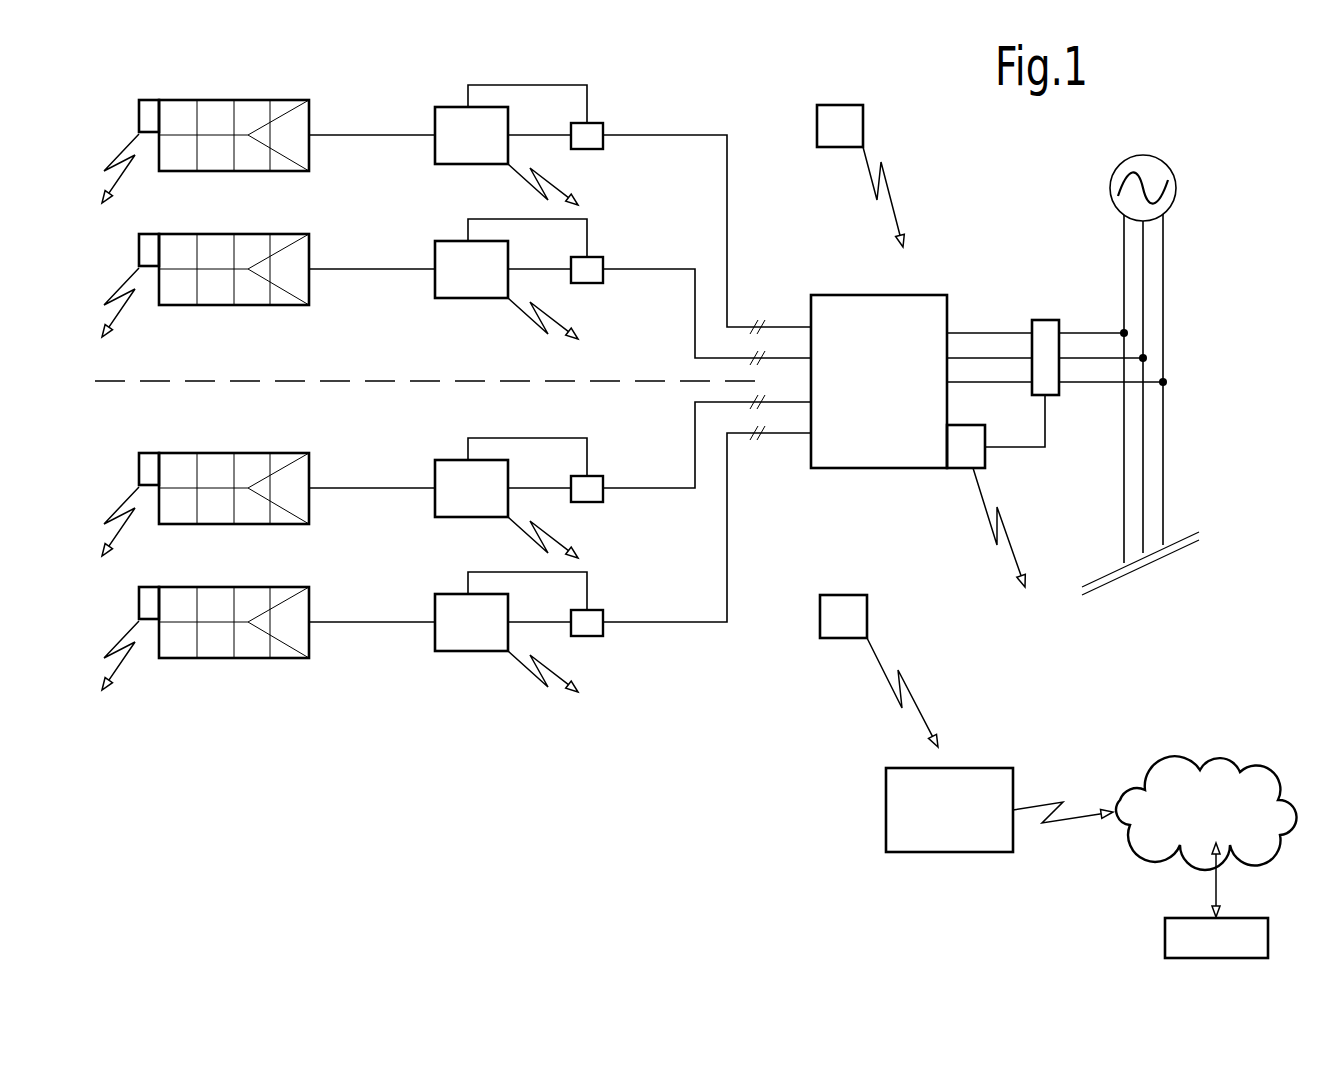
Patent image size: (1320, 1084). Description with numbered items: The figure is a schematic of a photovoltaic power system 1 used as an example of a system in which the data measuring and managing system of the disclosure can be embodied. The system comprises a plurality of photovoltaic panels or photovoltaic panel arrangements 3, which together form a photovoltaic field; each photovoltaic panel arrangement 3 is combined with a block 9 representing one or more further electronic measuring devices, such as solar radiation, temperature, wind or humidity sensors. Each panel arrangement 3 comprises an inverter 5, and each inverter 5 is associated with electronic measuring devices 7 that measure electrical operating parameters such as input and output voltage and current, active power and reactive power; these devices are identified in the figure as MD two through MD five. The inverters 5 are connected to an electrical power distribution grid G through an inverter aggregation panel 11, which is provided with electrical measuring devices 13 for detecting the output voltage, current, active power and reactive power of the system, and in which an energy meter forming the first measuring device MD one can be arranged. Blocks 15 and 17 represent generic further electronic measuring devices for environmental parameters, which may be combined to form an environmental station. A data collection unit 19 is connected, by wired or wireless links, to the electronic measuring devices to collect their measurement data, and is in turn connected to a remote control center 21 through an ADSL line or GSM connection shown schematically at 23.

The photovoltaic power system 1 is at (1252, 153).
The photovoltaic panel arrangement 3 is at (217, 123).
The inverter 5 is at (435, 148).
The electronic measuring device 7 is at (593, 123).
The further electronic measuring device 9 is at (152, 107).
The inverter aggregation panel 11 is at (858, 294).
The electrical measuring device 13 is at (960, 470).
The further electronic measuring device 15 is at (858, 610).
The further electronic measuring device 17 is at (850, 122).
The data collection unit 19 is at (886, 818).
The remote control center 21 is at (1165, 942).
The connection 23 is at (1220, 760).
The electrical power distribution grid G is at (1205, 332).